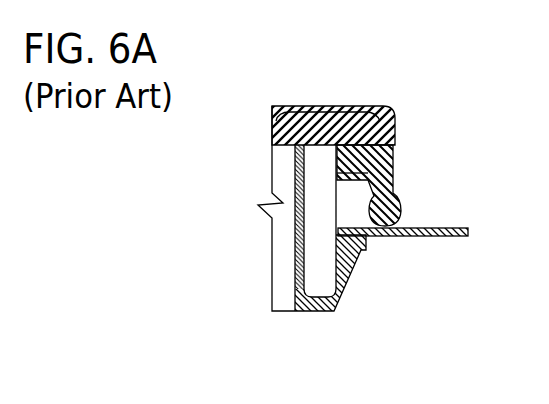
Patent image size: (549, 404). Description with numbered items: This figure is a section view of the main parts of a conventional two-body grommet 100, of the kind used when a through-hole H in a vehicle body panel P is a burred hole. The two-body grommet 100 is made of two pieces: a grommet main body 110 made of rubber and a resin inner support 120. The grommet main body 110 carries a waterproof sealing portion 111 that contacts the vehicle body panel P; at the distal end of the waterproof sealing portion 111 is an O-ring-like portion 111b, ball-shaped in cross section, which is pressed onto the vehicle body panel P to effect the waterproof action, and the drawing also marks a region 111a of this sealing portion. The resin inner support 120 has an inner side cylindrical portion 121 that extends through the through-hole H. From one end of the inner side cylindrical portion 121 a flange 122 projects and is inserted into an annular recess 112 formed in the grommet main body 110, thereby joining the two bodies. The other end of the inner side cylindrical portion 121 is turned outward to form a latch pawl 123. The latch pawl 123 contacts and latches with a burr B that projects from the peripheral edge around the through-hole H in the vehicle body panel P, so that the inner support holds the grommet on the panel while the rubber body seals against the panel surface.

The two-body grommet 100 is at (397, 109).
The grommet main body 110 is at (315, 130).
The annular recess 112 is at (342, 145).
The flange 122 is at (363, 130).
The waterproof sealing portion 111 is at (412, 200).
The lip neck portion 111a is at (412, 193).
The O-ring-like portion 111b is at (408, 205).
The resin inner support 120 is at (333, 311).
The inner side cylindrical portion 121 is at (295, 259).
The latch pawl 123 is at (352, 280).
The vehicle body panel P is at (450, 237).
The through-hole H is at (340, 226).
The burr B is at (353, 242).